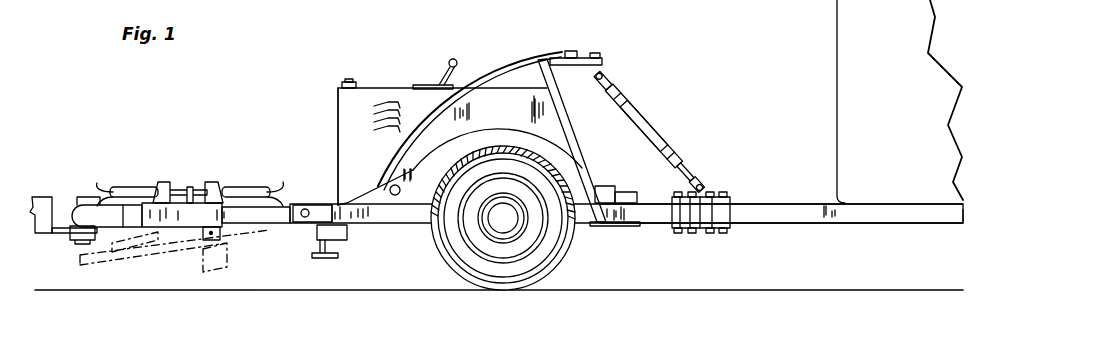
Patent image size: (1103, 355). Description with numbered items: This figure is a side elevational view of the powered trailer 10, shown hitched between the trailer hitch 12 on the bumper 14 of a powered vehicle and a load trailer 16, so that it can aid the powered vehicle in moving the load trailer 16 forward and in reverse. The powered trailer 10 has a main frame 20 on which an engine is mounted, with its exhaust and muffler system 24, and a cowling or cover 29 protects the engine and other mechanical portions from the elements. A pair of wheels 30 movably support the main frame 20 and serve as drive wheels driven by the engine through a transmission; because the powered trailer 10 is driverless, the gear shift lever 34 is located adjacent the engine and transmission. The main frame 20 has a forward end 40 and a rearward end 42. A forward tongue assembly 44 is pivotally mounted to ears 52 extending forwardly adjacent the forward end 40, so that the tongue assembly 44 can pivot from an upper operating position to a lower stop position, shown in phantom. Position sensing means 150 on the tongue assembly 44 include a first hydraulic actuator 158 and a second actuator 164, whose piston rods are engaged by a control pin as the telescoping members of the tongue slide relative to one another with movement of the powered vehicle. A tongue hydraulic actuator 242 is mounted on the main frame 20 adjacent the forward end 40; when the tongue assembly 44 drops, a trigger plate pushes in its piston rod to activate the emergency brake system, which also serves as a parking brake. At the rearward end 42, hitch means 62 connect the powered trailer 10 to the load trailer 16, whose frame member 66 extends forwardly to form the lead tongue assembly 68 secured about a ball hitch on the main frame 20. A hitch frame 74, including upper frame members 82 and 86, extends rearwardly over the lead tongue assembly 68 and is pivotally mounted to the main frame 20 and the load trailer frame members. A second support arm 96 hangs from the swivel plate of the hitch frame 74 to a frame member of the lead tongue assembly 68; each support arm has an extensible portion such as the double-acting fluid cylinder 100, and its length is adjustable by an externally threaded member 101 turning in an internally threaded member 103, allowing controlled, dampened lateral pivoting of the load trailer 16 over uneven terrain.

The powered trailer 10 is at (370, 58).
The trailer hitch 12 is at (62, 228).
The bumper 14 is at (42, 197).
The load trailer 16 is at (893, 102).
The main frame 20 is at (382, 233).
The exhaust and muffler system 24 is at (605, 186).
The cowling or cover 29 is at (336, 103).
The wheels 30 is at (453, 260).
The gear shift lever 34 is at (450, 60).
The forward end 40 is at (318, 205).
The rearward end 42 is at (603, 226).
The forward tongue assembly 44 is at (180, 219).
The ears 52 is at (327, 203).
The hitch means 62 is at (672, 130).
The frame member 66 is at (798, 207).
The lead tongue assembly 68 is at (652, 226).
The hitch frame 74 is at (605, 53).
The upper frame member 82 is at (502, 65).
The upper frame member 86 is at (527, 60).
The second support arm 96 is at (644, 125).
The double-acting fluid cylinder 100 is at (603, 80).
The externally threaded member 101 is at (685, 172).
The internally threaded member 103 is at (643, 126).
The position sensing means 150 is at (187, 173).
The first hydraulic actuator 158 is at (130, 187).
The second actuator 164 is at (253, 183).
The tongue hydraulic actuator 242 is at (348, 243).